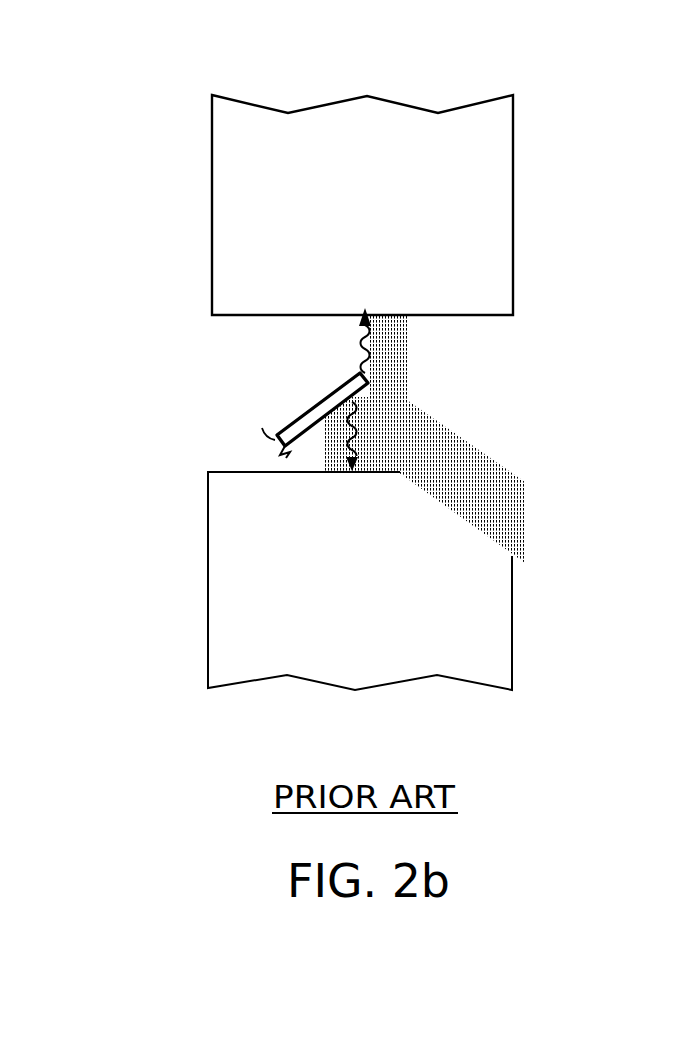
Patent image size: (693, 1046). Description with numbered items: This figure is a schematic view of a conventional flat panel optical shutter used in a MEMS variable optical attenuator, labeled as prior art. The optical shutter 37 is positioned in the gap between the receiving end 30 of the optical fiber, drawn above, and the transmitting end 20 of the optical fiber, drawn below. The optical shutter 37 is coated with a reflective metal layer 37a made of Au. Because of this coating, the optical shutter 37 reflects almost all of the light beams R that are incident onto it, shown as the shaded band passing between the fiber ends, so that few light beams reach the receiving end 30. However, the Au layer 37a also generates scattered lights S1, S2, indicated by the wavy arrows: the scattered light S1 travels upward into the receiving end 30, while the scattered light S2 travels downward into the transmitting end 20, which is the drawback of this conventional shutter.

The receiving end 30 is at (500, 172).
The transmitting end 20 is at (497, 622).
The optical shutter 37 is at (290, 425).
The reflective metal layer 37a is at (320, 399).
The scattered light S1 is at (360, 341).
The scattered light S2 is at (360, 433).
The light beams R is at (462, 458).